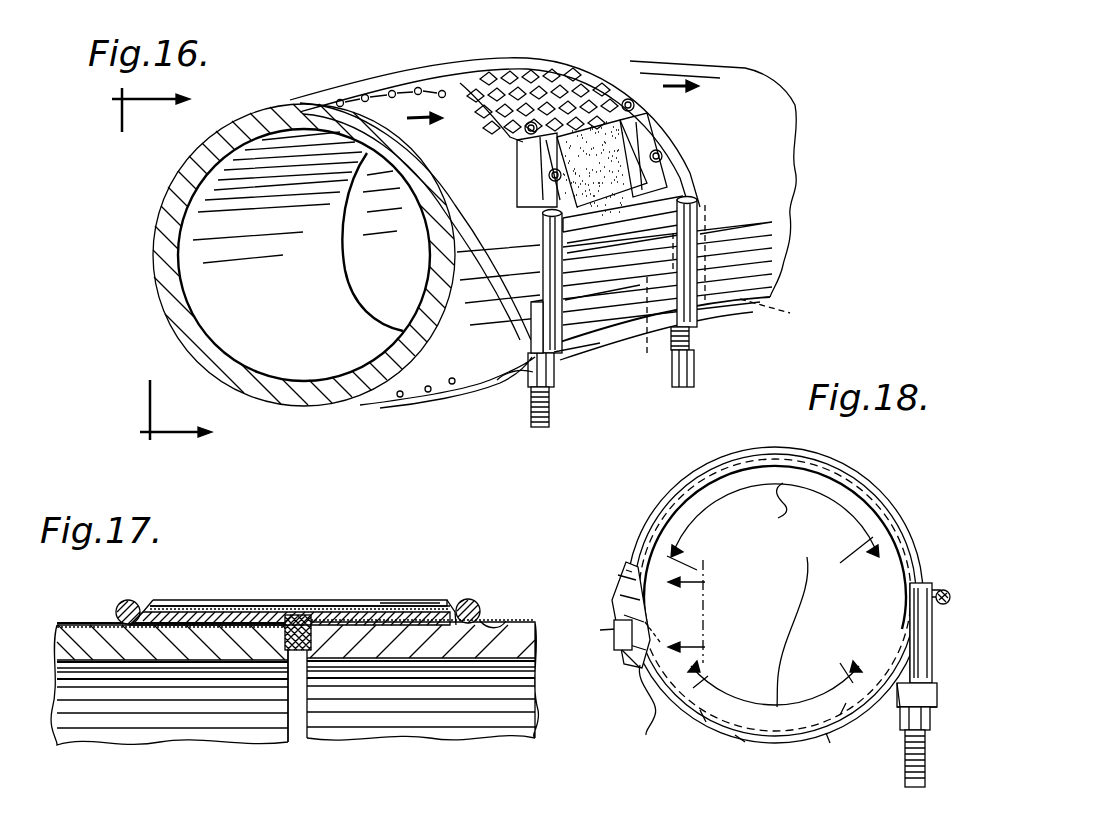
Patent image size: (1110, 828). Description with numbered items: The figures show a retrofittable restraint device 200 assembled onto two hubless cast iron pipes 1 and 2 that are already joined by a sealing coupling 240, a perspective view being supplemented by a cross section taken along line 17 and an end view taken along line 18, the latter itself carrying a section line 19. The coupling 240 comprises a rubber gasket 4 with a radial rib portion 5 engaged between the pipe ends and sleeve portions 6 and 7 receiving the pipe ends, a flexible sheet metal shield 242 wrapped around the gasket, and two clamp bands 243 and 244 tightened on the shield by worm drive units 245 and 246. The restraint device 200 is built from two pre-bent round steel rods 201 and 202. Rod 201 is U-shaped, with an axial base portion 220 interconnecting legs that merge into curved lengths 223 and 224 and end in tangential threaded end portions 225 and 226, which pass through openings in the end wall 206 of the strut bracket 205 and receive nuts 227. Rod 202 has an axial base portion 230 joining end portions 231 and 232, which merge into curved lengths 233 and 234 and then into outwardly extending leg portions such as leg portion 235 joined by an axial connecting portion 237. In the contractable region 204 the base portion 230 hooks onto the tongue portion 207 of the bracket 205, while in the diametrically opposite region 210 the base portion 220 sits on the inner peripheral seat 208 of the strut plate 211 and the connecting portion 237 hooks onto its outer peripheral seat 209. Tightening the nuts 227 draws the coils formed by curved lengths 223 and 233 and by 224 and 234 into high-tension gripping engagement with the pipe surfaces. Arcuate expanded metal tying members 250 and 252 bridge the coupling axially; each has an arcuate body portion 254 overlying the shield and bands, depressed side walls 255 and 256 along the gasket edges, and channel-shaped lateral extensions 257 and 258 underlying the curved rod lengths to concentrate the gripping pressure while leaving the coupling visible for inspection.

In FIG. 16, the pipe 1 is at (195, 236).
In FIG. 17, the pipe 1 is at (142, 655).
In FIG. 16, the pipe 2 is at (765, 190).
In FIG. 17, the pipe 2 is at (427, 647).
In FIG. 17, the gasket 4 is at (300, 617).
In FIG. 17, the radial rib portion 5 is at (297, 653).
In FIG. 17, the sleeve portion 6 is at (205, 633).
In FIG. 17, the sleeve portion 7 is at (363, 630).
In FIG. 16, the section line 17— 17 is at (437, 122).
In FIG. 16, the section line 18— 18 is at (169, 267).
In FIG. 18, the section line 19— 19 is at (703, 610).
In FIG. 16, the restraint device 200 is at (712, 238).
In FIG. 18, the restraint device 200 is at (922, 518).
In FIG. 16, the rod 201 is at (399, 60).
In FIG. 18, the rod 201 is at (701, 462).
In FIG. 16, the rod 202 is at (424, 408).
In FIG. 18, the rod 202 is at (779, 755).
In FIG. 16, the contractable region 204 is at (524, 238).
In FIG. 18, the contractable region 204 is at (890, 605).
In FIG. 16, the strut bracket 205 is at (600, 318).
In FIG. 18, the strut bracket 205 is at (937, 672).
In FIG. 16, the end wall 206 is at (530, 350).
In FIG. 18, the end wall 206 is at (897, 683).
In FIG. 16, the tongue portion 207 is at (655, 190).
In FIG. 18, the inner peripheral seat 208 is at (643, 627).
In FIG. 18, the outer peripheral seat 209 is at (603, 580).
In FIG. 18, the diametrically opposite region 210 is at (615, 663).
In FIG. 18, the strut plate 211 is at (618, 632).
In FIG. 18, the base portion 220 is at (657, 708).
In FIG. 16, the curved length 223 is at (355, 78).
In FIG. 17, the curved length 223 is at (123, 600).
In FIG. 18, the curved length 223 is at (790, 453).
In FIG. 16, the curved length 224 is at (570, 62).
In FIG. 17, the curved length 224 is at (478, 597).
In FIG. 16, the end portion 225 is at (537, 300).
In FIG. 18, the end portion 225 is at (910, 670).
In FIG. 16, the end portion 226 is at (785, 309).
In FIG. 16, the nut 227 is at (693, 342).
In FIG. 18, the nut 227 is at (930, 722).
In FIG. 16, the base portion 230 is at (663, 210).
In FIG. 18, the base portion 230 is at (950, 596).
In FIG. 16, the end portion 231 is at (632, 251).
In FIG. 18, the end portion 231 is at (932, 632).
In FIG. 16, the end portion 232 is at (712, 215).
In FIG. 16, the curved length 233 is at (405, 398).
In FIG. 18, the curved length 233 is at (720, 733).
In FIG. 16, the curved length 234 is at (587, 357).
In FIG. 18, the leg portion 235 is at (620, 622).
In FIG. 18, the axial connecting portion 237 is at (613, 570).
In FIG. 16, the sealing coupling 240 is at (668, 165).
In FIG. 16, the sheet metal shield 242 is at (600, 130).
In FIG. 17, the sheet metal shield 242 is at (263, 603).
In FIG. 16, the clamp band 243 is at (545, 188).
In FIG. 17, the clamp band 243 is at (187, 607).
In FIG. 16, the clamp band 244 is at (602, 167).
In FIG. 17, the clamp band 244 is at (393, 598).
In FIG. 16, the worm drive unit 245 is at (538, 154).
In FIG. 16, the worm drive unit 246 is at (660, 132).
In FIG. 16, the tying member 250 is at (546, 72).
In FIG. 18, the tying member 250 is at (867, 480).
In FIG. 16, the tying member 252 is at (494, 395).
In FIG. 18, the tying member 252 is at (820, 747).
In FIG. 17, the arcuate body portion 254 is at (237, 600).
In FIG. 17, the depressed side wall 255 is at (147, 600).
In FIG. 17, the depressed side wall 256 is at (478, 588).
In FIG. 16, the lateral extension 257 is at (440, 90).
In FIG. 17, the lateral extension 257 is at (105, 640).
In FIG. 17, the lateral extension 258 is at (490, 623).